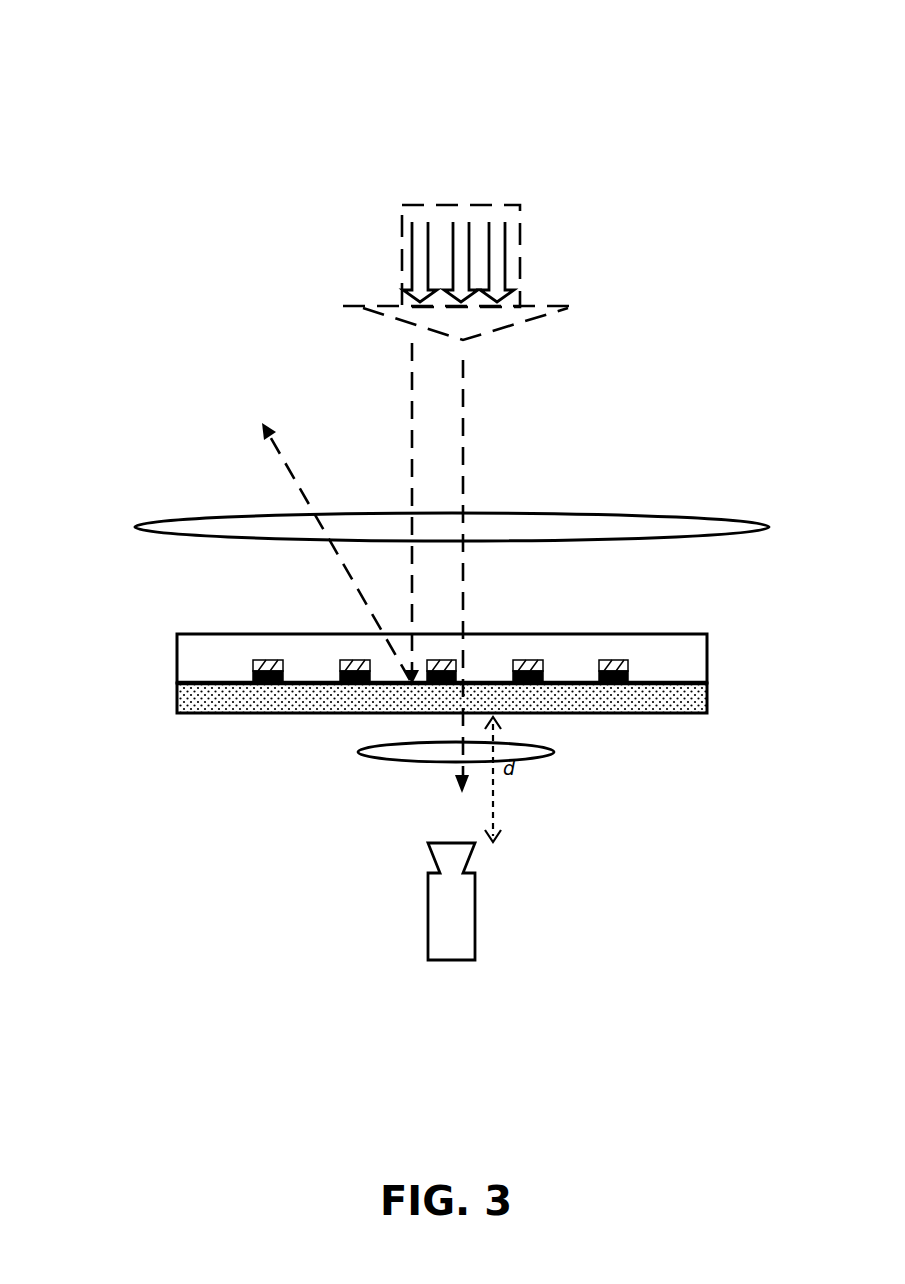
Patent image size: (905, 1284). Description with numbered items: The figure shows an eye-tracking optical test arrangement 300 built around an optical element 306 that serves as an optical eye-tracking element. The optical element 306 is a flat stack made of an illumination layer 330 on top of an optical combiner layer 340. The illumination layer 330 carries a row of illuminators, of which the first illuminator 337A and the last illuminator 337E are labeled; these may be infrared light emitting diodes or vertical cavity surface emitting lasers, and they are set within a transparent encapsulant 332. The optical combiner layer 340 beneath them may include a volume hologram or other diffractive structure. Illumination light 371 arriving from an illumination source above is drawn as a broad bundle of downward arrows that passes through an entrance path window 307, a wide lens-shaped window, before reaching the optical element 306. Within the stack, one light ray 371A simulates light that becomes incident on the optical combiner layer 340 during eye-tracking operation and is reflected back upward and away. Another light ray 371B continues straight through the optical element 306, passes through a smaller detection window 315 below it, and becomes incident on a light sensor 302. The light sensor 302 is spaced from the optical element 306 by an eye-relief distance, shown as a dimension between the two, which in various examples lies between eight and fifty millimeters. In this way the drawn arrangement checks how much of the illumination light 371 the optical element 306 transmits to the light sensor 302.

The imaging system 300 is at (737, 81).
The illumination light 371 is at (518, 260).
The reflected illumination light 371A is at (280, 457).
The transmitted illumination light ray 371B is at (465, 482).
The entrance path window 307 is at (583, 513).
The optical element 306 is at (135, 657).
The illumination layer 330 is at (713, 680).
The optical combiner layer 340 is at (713, 684).
The transparent encapsulant 332 is at (586, 667).
The illuminator 337A is at (282, 670).
The illuminator 337E is at (628, 668).
The detection window 315 is at (357, 748).
The light sensor 302 is at (475, 920).